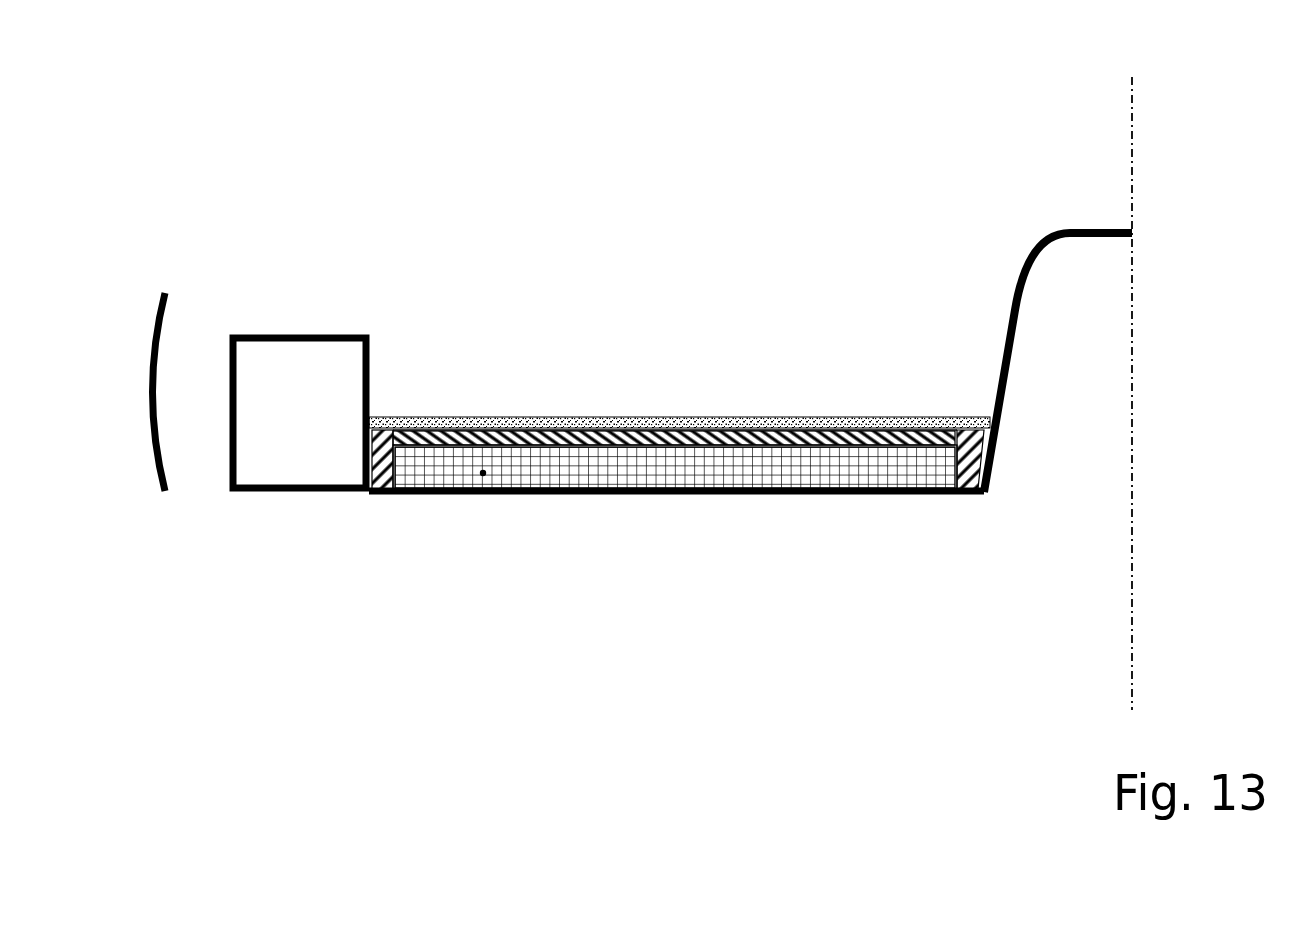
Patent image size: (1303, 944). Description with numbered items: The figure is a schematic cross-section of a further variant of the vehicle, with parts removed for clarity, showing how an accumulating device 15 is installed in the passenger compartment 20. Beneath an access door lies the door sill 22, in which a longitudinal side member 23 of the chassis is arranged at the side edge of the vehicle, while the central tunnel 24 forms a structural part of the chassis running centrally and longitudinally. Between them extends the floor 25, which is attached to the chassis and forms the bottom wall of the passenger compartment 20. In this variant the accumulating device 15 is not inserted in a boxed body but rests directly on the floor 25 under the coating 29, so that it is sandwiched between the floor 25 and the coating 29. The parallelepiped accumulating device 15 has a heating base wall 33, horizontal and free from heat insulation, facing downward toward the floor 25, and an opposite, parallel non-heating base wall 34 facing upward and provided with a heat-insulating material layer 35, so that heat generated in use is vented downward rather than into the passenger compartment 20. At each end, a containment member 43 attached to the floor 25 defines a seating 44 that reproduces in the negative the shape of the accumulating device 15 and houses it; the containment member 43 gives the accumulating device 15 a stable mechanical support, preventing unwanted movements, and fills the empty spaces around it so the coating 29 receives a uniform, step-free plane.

The accumulating device 15 is at (585, 465).
The passenger compartment 20 is at (835, 145).
The door sill 22 is at (212, 236).
The longitudinal side member 23 is at (320, 335).
The central tunnel 24 is at (1045, 236).
The floor 25 is at (702, 495).
The coating 29 is at (660, 417).
The heating base wall 33 is at (796, 500).
The non-heating base wall 34 is at (855, 423).
The heat-insulating material layer 35 is at (535, 440).
The containment member 43 is at (381, 496).
The seating 44 is at (483, 474).